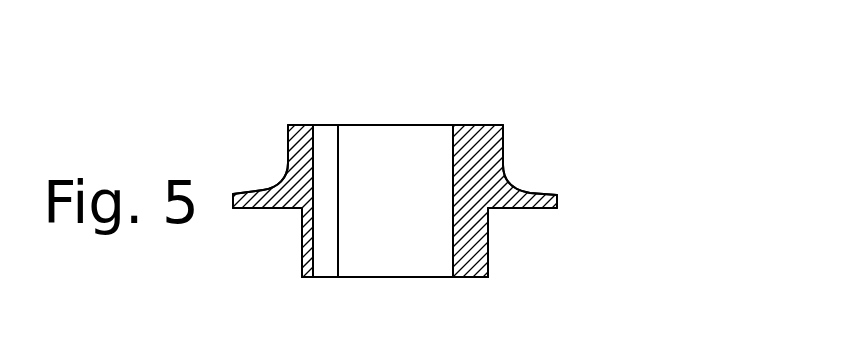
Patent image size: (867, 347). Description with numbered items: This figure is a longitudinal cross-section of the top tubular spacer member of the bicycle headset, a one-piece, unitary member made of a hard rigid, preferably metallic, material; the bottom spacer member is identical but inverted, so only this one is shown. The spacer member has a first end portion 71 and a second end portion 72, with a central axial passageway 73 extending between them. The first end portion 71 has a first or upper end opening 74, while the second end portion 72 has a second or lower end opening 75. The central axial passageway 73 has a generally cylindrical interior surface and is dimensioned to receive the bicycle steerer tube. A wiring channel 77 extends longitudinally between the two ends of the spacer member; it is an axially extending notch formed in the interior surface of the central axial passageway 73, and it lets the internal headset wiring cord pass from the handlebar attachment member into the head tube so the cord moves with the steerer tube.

The first end portion 71 is at (468, 125).
The second end portion 72 is at (470, 278).
The central axial passageway 73 is at (422, 164).
The first end opening 74 is at (370, 124).
The second end opening 75 is at (367, 278).
The wiring channel 77 is at (312, 163).